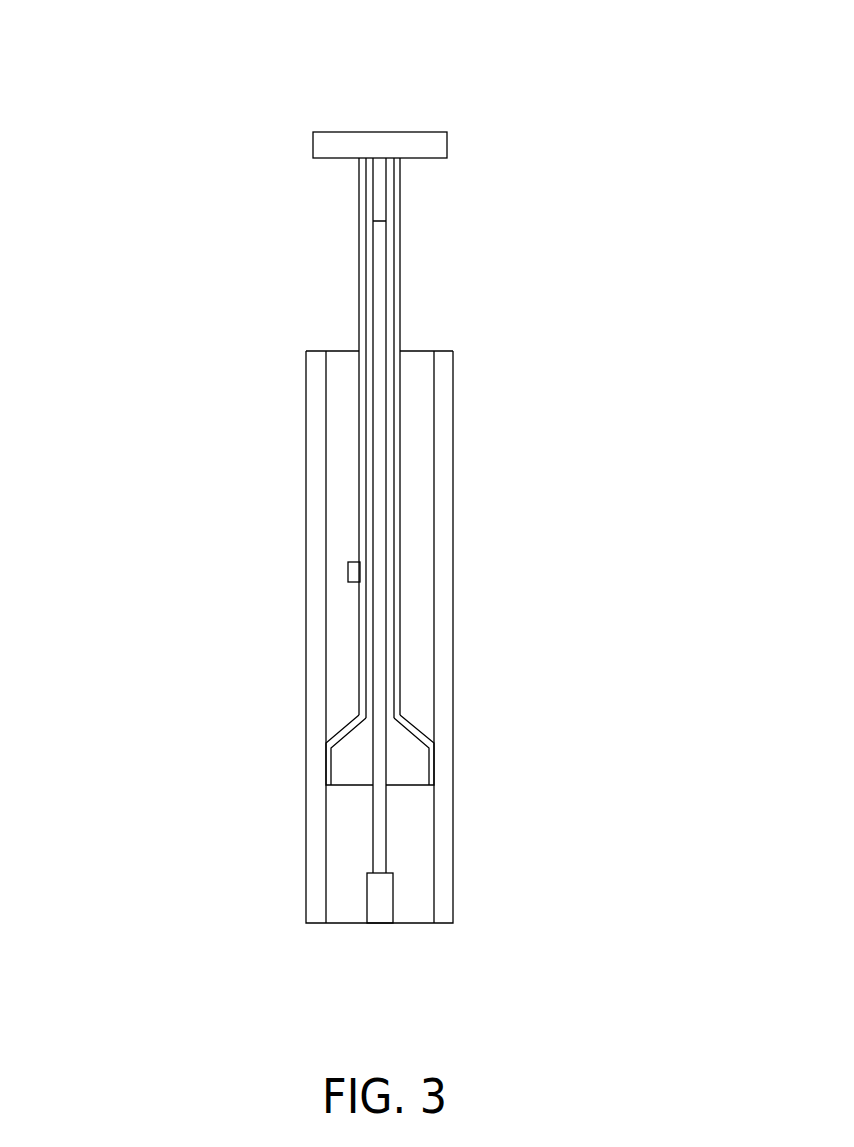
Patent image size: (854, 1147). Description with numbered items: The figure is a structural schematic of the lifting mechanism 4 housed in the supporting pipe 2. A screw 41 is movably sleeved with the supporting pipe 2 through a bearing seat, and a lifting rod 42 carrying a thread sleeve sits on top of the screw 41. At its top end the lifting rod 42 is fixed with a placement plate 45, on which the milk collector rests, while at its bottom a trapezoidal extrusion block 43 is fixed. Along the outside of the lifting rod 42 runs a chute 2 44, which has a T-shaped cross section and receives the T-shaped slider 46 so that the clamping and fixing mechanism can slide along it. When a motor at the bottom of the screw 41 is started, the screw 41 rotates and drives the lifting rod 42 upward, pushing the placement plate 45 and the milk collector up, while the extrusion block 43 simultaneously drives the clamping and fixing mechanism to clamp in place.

The supporting pipe 2 is at (454, 493).
The lifting mechanism 4 is at (400, 207).
The screw 41 is at (373, 843).
The lifting rod 42 is at (397, 639).
The extrusion block 43 is at (348, 756).
The chute 2 44 is at (365, 608).
The placement plate 45 is at (380, 132).
The slider 46 is at (350, 568).